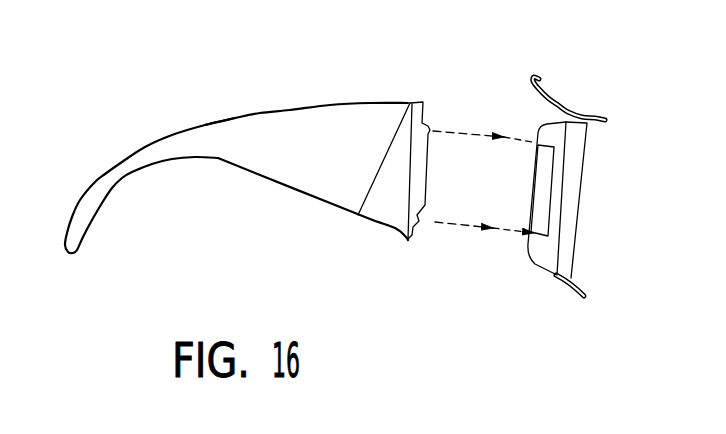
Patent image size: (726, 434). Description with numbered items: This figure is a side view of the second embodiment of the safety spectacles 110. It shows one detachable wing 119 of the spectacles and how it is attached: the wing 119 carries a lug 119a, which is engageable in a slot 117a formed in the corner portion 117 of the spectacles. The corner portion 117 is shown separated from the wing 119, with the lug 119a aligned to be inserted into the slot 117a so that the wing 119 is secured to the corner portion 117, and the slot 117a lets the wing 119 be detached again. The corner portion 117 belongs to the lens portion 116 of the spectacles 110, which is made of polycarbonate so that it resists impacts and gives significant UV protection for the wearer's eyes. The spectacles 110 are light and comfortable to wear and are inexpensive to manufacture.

The spectacles 110 is at (297, 205).
The wing 119 is at (218, 158).
The lug 119a is at (424, 202).
The lens portion 116 is at (597, 222).
The corner portion 117 is at (541, 251).
The slot 117a is at (547, 180).